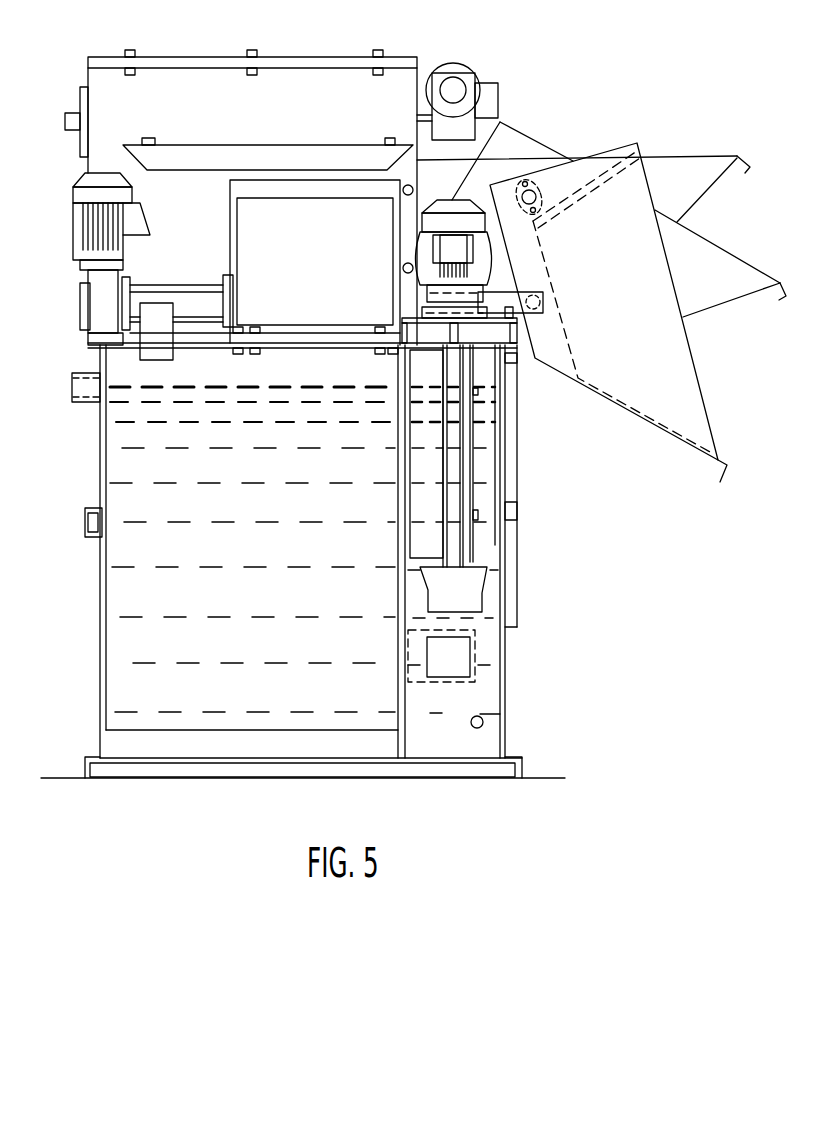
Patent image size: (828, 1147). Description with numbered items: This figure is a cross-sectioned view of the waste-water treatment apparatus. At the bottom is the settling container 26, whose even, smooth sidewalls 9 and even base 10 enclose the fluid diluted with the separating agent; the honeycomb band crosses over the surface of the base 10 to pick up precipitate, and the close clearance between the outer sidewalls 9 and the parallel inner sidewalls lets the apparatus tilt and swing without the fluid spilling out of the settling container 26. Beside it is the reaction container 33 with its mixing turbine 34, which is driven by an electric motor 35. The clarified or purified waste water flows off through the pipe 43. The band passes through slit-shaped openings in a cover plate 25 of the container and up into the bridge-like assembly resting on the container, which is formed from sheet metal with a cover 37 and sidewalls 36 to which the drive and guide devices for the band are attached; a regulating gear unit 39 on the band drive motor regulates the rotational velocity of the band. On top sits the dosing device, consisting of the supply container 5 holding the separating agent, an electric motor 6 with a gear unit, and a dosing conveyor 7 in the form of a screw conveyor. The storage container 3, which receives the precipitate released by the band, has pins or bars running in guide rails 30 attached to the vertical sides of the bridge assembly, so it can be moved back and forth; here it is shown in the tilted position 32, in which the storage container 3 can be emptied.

The storage container 3 is at (622, 297).
The supply container 5 is at (306, 259).
The electric motor 6 is at (125, 198).
The dosing conveyor 7 is at (122, 298).
The sidewalls 9 is at (237, 373).
The base 10 is at (245, 760).
The cover plate 25 is at (335, 345).
The settling container 26 is at (135, 588).
The guide rails 30 is at (520, 302).
The tilted position 32 is at (657, 225).
The reaction container 33 is at (487, 548).
The mixing turbine 34 is at (465, 598).
The electric motor 35 is at (427, 222).
The sidewalls 36 is at (277, 122).
The cover 37 is at (318, 57).
The regulating gear unit 39 is at (490, 101).
The pipe 43 is at (82, 390).